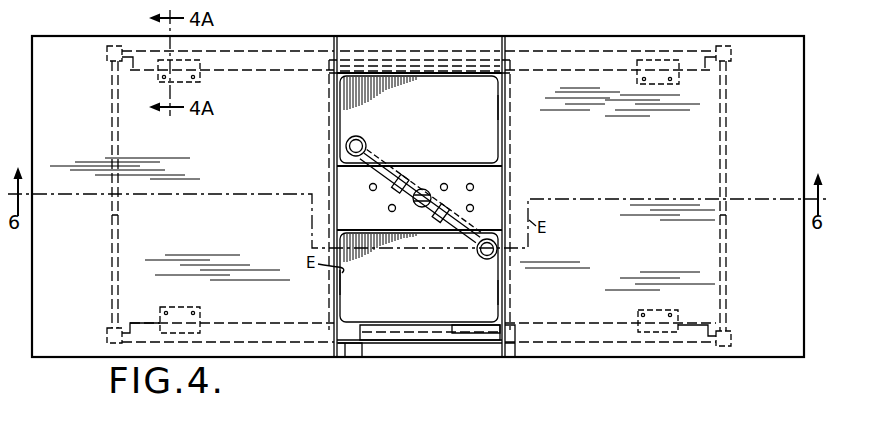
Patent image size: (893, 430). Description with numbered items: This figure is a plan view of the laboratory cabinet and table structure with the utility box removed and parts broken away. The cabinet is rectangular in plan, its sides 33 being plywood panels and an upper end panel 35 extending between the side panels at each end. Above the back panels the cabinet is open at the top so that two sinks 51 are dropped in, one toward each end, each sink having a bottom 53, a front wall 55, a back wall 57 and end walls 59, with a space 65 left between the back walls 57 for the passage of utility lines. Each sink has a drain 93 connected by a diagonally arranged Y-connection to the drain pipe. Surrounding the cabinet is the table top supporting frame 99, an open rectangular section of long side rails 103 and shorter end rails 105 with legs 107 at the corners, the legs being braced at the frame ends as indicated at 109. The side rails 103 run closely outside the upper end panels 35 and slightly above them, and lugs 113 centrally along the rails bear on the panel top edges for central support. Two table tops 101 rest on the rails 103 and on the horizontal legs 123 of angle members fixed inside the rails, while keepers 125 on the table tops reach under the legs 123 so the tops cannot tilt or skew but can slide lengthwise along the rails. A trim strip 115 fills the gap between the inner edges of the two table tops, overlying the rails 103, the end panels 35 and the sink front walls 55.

The sides 33 is at (333, 148).
The upper end panel 35 is at (482, 335).
The sink 51 is at (353, 167).
The bottom 53 is at (428, 121).
The front wall 55 is at (414, 321).
The back wall 57 is at (430, 163).
The end wall 59 is at (498, 108).
The space 65 is at (488, 187).
The drain 93 is at (356, 136).
The table top supporting frame 99 is at (113, 108).
The table top 101 is at (272, 42).
The side rail 103 is at (596, 50).
The end rail 105 is at (112, 258).
The leg 107 is at (112, 46).
The brace 109 is at (112, 290).
The lug 113 is at (448, 72).
The trim strip 115 is at (400, 38).
The horizontal leg 123 is at (131, 68).
The keeper 125 is at (202, 60).